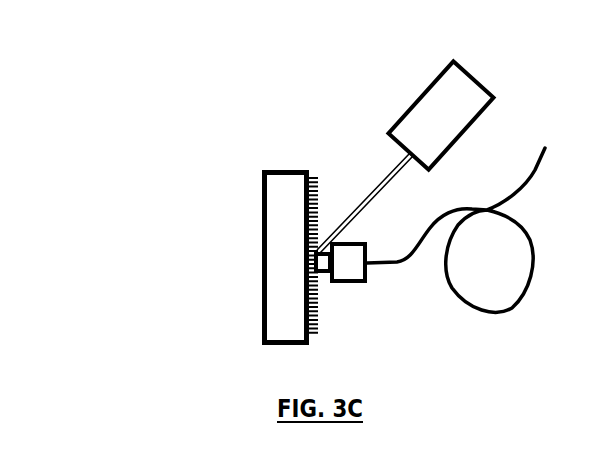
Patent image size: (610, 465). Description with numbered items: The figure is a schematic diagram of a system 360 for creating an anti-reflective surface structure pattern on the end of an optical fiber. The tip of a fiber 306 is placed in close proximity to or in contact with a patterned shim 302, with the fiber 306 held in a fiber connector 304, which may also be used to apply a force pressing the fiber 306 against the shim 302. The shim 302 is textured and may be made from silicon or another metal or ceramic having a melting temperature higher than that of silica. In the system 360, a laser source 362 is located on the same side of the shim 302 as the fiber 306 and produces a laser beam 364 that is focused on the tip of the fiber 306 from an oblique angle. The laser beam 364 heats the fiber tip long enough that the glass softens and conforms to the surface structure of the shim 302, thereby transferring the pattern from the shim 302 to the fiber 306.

The system 360 is at (223, 212).
The patterned shim 302 is at (278, 187).
The fiber connector 304 is at (352, 268).
The fiber 306 is at (537, 172).
The laser source 362 is at (407, 124).
The laser beam 364 is at (360, 197).